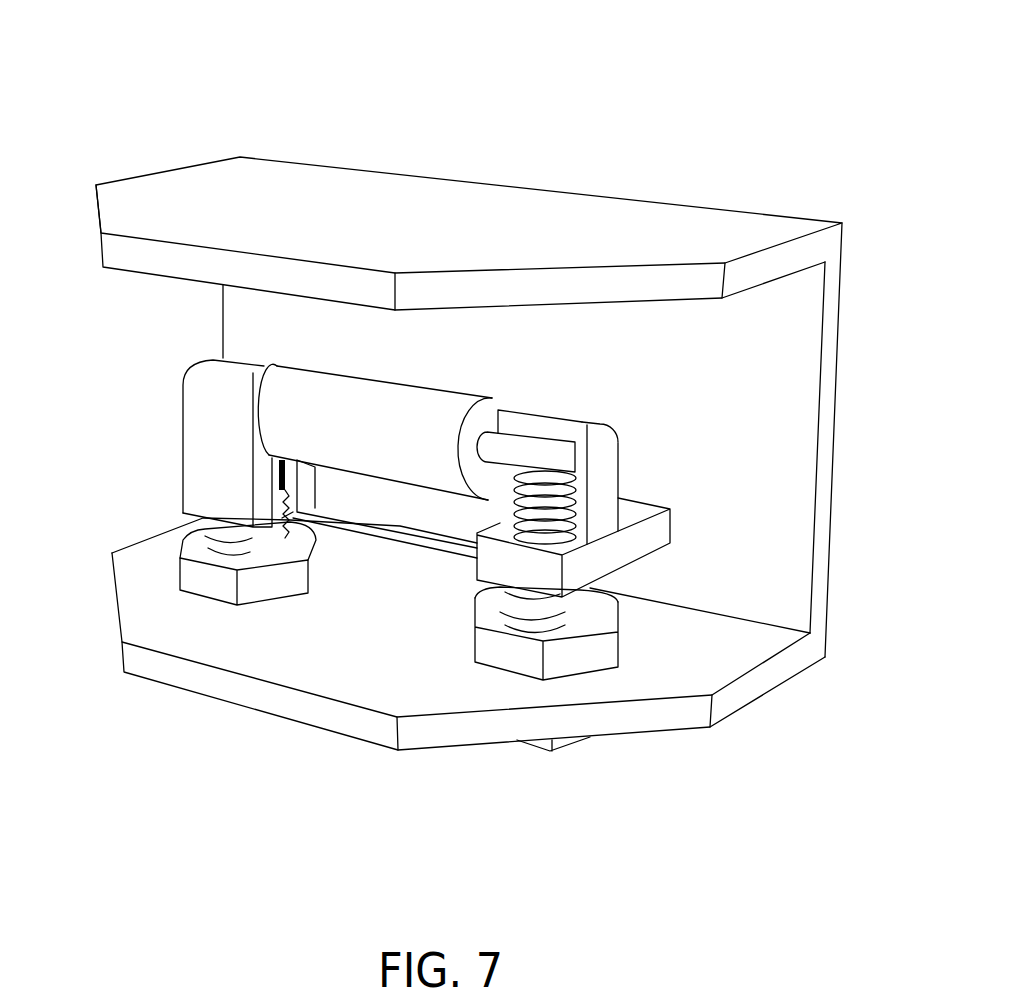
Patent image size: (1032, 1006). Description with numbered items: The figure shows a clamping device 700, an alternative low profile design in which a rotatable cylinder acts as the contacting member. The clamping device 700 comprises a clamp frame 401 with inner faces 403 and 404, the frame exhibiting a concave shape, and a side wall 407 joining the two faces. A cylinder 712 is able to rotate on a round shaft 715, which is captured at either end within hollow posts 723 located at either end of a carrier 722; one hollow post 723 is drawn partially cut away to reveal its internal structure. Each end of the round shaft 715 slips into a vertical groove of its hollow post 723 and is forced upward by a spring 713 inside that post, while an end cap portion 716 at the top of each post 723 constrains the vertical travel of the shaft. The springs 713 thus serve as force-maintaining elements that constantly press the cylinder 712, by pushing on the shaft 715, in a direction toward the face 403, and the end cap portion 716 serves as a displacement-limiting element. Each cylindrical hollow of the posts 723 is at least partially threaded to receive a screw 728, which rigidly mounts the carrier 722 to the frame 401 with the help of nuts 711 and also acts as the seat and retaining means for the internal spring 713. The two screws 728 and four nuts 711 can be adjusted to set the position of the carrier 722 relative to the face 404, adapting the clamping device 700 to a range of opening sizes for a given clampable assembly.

The clamping device 700 is at (654, 90).
The clamp frame 401 is at (408, 173).
The inner face 403 is at (157, 284).
The inner face 404 is at (145, 589).
The side wall 407 is at (790, 447).
The nut 711 is at (473, 650).
The cylinder 712 is at (380, 372).
The spring 713 is at (580, 492).
The round shaft 715 is at (607, 423).
The end cap portion 716 is at (527, 425).
The carrier 722 is at (670, 528).
The hollow post 723 is at (182, 430).
The screw 728 is at (500, 594).